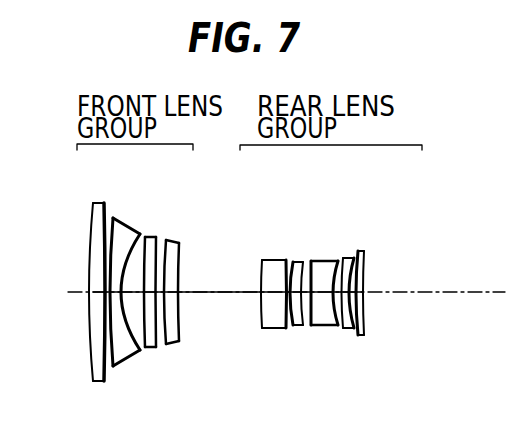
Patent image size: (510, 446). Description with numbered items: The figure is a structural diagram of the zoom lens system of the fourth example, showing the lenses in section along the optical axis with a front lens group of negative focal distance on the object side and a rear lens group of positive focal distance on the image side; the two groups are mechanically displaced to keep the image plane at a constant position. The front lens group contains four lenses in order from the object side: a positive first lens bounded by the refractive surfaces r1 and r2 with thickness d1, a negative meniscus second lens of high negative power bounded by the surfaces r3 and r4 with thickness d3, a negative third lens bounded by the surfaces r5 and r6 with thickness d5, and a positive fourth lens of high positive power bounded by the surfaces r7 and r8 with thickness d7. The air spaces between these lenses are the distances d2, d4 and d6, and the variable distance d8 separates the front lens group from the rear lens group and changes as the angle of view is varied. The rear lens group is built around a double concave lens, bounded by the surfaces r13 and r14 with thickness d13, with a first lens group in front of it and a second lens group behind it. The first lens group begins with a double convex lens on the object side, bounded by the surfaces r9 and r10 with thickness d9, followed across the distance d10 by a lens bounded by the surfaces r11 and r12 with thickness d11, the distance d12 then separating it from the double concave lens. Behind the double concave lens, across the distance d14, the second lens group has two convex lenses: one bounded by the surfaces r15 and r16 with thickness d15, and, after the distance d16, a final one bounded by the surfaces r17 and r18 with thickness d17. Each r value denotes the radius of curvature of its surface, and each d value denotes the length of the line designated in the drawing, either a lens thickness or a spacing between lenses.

The radius of curvature of the first refractive surface r1 is at (79, 292).
The radius of curvature of the second refractive surface r2 is at (87, 282).
The radius of curvature of the third refractive surface r3 is at (103, 265).
The radius of curvature of the fourth refractive surface r4 is at (125, 266).
The radius of curvature of the fifth refractive surface r5 is at (136, 268).
The radius of curvature of the sixth refractive surface r6 is at (155, 265).
The radius of curvature of the seventh refractive surface r7 is at (174, 272).
The radius of curvature of the eighth refractive surface r8 is at (192, 288).
The radius of curvature of the ninth refractive surface r9 is at (247, 292).
The radius of curvature of the tenth refractive surface r10 is at (267, 282).
The radius of curvature of the eleventh refractive surface r11 is at (285, 275).
The radius of curvature of the twelfth refractive surface r12 is at (304, 269).
The radius of curvature of the thirteenth refractive surface r13 is at (319, 264).
The radius of curvature of the fourteenth refractive surface r14 is at (337, 276).
The radius of curvature of the fifteenth refractive surface r15 is at (359, 273).
The radius of curvature of the sixteenth refractive surface r16 is at (375, 282).
The radius of curvature of the seventeenth refractive surface r17 is at (391, 293).
The radius of curvature of the eighteenth refractive surface r18 is at (406, 293).
The thickness of the first lens d1 is at (76, 317).
The distance between the first and second lenses d2 is at (81, 330).
The thickness of the second lens d3 is at (92, 348).
The distance between the second and third lenses d4 is at (123, 347).
The thickness of the third lens d5 is at (139, 343).
The distance between the third and fourth lenses d6 is at (153, 339).
The thickness of the fourth lens d7 is at (186, 321).
The distance between the front and rear lens groups d8 is at (219, 311).
The thickness of the double convex lens d9 is at (258, 321).
The distance between the double convex lens and the following lens d10 is at (264, 334).
The thickness of the second lens of the rear first lens group d11 is at (281, 346).
The distance between the first lens group and the double concave lens d12 is at (293, 331).
The thickness of the double concave lens d13 is at (313, 346).
The distance between the double concave lens and the second lens group d14 is at (334, 336).
The thickness of the first convex lens of the second lens group d15 is at (357, 346).
The distance between the two convex lenses of the second lens group d16 is at (375, 334).
The thickness of the last convex lens d17 is at (384, 317).